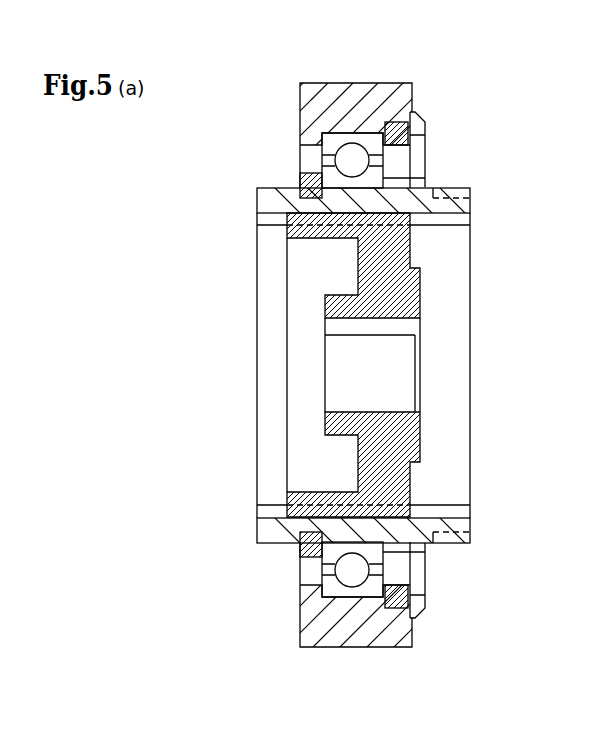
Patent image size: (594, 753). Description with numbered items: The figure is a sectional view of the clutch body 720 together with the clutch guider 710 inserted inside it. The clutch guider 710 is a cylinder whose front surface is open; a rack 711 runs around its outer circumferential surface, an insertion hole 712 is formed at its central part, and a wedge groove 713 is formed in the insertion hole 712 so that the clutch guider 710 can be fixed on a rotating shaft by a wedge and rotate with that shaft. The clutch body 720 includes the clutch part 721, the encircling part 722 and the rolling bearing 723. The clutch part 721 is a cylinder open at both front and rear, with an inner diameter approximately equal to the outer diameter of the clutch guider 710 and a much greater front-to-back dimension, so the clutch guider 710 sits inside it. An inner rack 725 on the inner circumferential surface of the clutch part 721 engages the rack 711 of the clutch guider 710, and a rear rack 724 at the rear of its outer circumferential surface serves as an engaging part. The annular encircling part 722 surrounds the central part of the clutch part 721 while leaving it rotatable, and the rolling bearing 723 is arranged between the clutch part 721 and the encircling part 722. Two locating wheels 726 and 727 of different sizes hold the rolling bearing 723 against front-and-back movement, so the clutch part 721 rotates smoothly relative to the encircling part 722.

The clutch guider 710 is at (346, 365).
The rack 711 is at (313, 240).
The insertion hole 712 is at (388, 408).
The wedge groove 713 is at (388, 333).
The clutch body 720 is at (435, 158).
The clutch part 721 is at (247, 243).
The encircling part 722 is at (292, 120).
The rolling bearing 723 is at (350, 132).
The rear rack 724 is at (460, 187).
The inner rack 725 is at (445, 221).
The locating wheel 726 is at (417, 105).
The locating wheel 727 is at (303, 165).